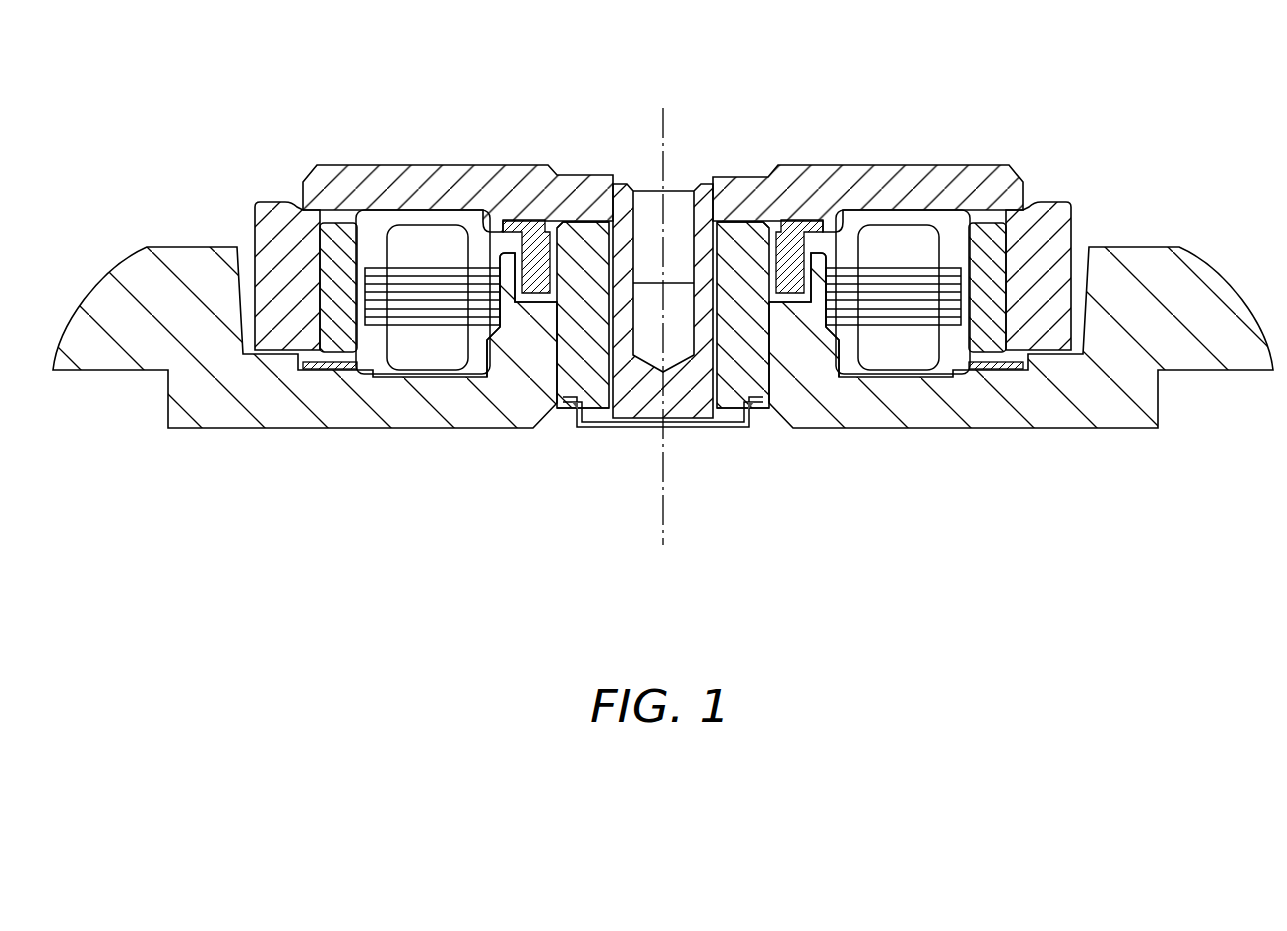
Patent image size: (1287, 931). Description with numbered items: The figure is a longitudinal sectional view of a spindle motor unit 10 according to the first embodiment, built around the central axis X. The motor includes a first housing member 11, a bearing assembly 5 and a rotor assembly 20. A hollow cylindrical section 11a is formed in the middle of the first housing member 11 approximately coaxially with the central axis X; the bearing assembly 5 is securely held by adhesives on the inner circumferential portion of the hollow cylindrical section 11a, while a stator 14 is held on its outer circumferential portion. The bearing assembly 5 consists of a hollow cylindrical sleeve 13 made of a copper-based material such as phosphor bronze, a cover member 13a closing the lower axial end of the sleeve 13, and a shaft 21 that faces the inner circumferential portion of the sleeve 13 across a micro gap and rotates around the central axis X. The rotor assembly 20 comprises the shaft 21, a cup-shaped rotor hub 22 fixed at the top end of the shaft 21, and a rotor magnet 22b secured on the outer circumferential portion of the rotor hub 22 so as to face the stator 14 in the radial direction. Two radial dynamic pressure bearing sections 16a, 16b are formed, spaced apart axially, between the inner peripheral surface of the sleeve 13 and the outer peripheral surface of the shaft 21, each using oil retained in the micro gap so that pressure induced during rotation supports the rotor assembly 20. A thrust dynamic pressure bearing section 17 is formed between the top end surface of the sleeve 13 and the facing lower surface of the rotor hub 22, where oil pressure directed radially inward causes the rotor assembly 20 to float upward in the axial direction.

The bearing assembly 5 is at (663, 298).
The stator (stationary portion) 10 is at (663, 342).
The first housing member 11 is at (400, 400).
The hollow cylindrical section 11a is at (515, 342).
The sleeve 13 is at (635, 327).
The cover member 13a is at (693, 430).
The stator 14 is at (431, 252).
The radial dynamic pressure bearing section 16a is at (600, 246).
The radial dynamic pressure bearing section 16b is at (618, 398).
The thrust dynamic pressure bearing section 17 is at (770, 244).
The rotor assembly 20 is at (663, 284).
The shaft 21 is at (697, 227).
The rotor hub 22 is at (836, 165).
The rotor magnet 22b is at (982, 342).
The central axis X is at (663, 165).